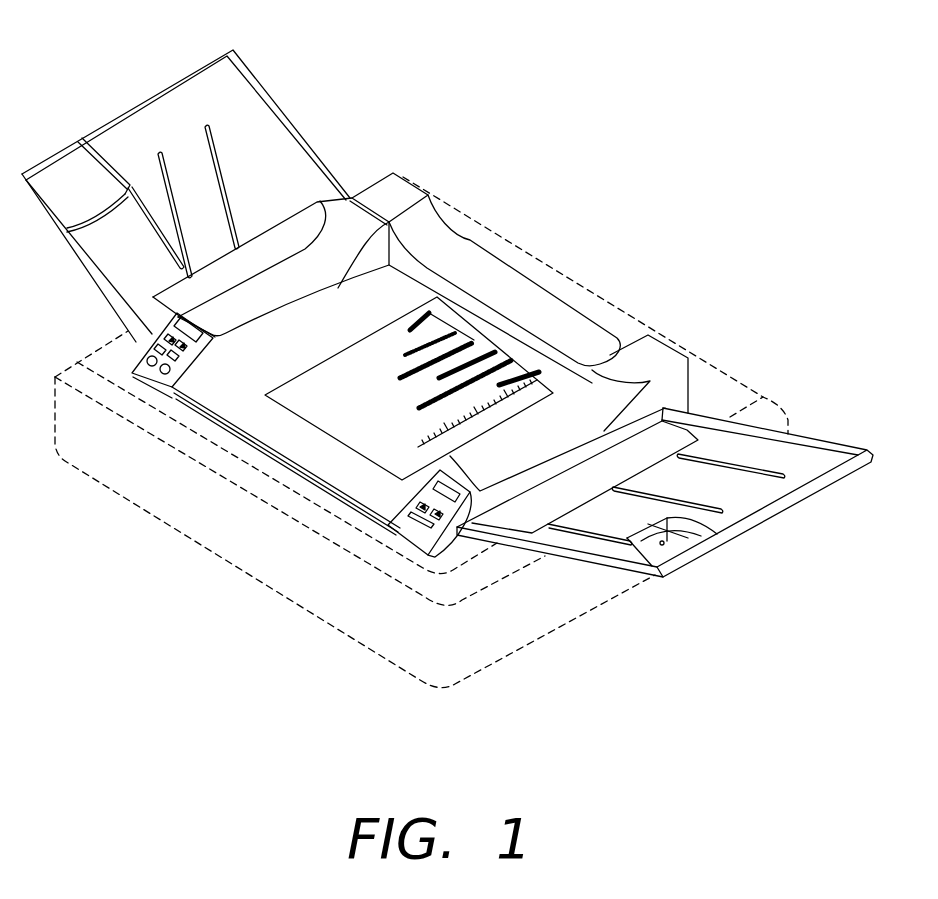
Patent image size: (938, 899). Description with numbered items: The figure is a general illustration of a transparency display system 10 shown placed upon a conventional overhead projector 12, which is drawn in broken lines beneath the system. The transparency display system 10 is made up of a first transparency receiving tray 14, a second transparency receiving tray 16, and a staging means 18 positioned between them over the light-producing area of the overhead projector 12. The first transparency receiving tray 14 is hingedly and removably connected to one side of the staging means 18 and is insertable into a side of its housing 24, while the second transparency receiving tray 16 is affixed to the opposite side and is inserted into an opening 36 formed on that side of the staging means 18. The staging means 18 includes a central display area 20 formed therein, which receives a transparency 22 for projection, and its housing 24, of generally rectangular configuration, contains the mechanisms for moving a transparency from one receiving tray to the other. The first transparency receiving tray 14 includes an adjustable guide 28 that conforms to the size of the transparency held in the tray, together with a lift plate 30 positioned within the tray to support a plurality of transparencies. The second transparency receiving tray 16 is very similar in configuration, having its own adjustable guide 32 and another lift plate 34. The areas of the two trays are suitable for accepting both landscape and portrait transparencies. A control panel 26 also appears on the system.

The transparency display system 10 is at (185, 583).
The overhead projector 12 is at (122, 477).
The first transparency receiving tray 14 is at (665, 498).
The second transparency receiving tray 16 is at (186, 186).
The staging means 18 is at (470, 240).
The central display area 20 is at (280, 433).
The transparency 22 is at (372, 357).
The housing 24 is at (378, 197).
The control panel 26 is at (438, 525).
The adjustable guide 28 is at (683, 533).
The lift plate 30 is at (660, 453).
The adjustable guide 32 is at (120, 163).
The lift plate 34 is at (306, 212).
The opening 36 is at (133, 360).